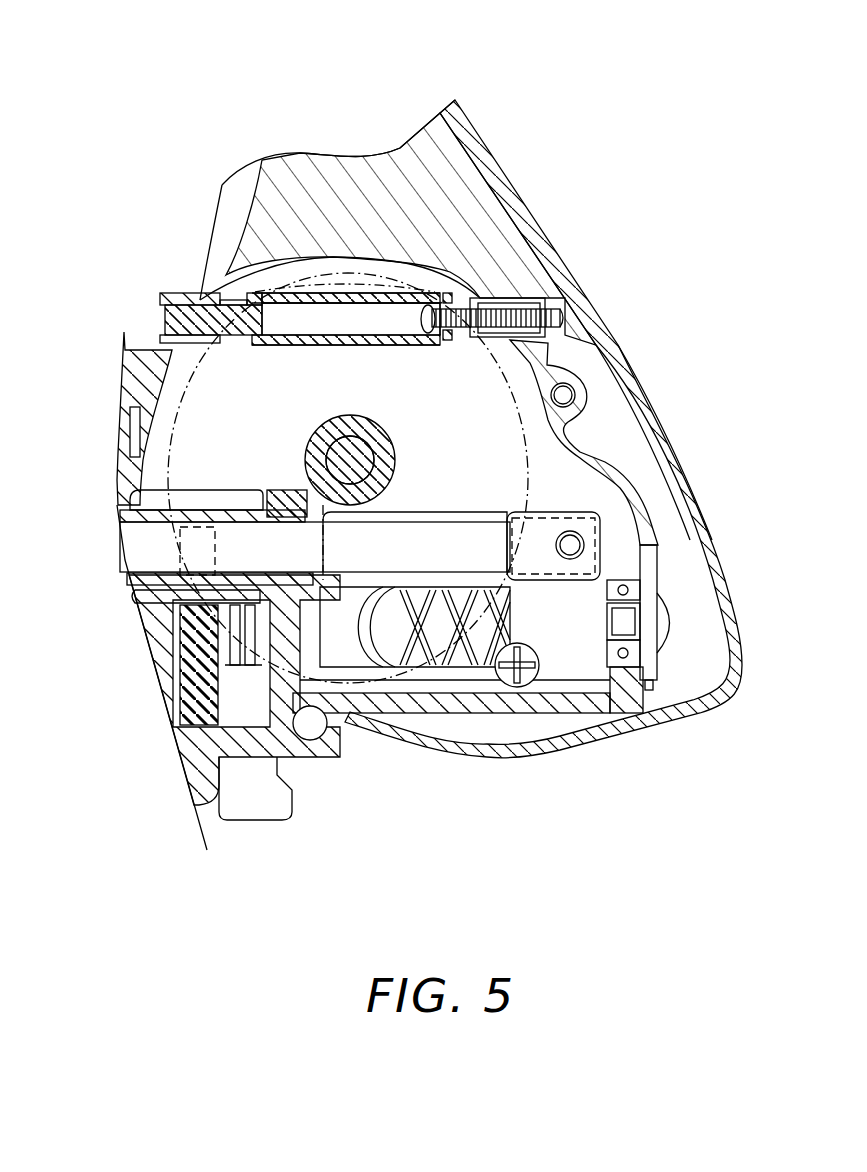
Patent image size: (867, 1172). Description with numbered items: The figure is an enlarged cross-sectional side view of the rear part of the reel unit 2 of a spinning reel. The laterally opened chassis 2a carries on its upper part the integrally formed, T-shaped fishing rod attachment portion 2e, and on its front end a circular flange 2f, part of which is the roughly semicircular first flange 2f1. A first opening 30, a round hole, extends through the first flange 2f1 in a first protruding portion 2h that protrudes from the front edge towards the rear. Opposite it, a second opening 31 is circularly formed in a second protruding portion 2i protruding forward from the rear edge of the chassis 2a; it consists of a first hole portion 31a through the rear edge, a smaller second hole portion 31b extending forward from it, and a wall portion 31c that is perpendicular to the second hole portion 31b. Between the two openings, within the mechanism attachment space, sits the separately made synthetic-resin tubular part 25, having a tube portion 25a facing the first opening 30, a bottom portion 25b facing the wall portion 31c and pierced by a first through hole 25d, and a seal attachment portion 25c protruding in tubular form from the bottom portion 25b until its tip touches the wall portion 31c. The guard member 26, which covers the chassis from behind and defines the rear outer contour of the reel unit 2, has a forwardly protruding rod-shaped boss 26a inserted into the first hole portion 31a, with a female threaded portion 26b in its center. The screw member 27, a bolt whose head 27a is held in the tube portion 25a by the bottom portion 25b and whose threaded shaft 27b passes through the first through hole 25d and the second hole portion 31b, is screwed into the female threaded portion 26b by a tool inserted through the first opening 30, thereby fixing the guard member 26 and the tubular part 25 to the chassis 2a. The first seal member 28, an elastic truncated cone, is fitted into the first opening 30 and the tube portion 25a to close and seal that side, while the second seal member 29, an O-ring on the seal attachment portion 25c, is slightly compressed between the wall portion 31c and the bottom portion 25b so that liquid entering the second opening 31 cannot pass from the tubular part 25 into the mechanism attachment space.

The reel unit 2 is at (519, 106).
The chassis 2a is at (600, 427).
The fishing rod attachment portion 2e is at (313, 190).
The circular flange 2f is at (175, 290).
The first flange 2f1 is at (160, 295).
The first protruding portion 2h is at (192, 350).
The second protruding portion 2i is at (458, 350).
The tubular part 25 is at (273, 346).
The tube portion 25a is at (262, 303).
The bottom portion 25b is at (372, 292).
The seal attachment portion 25c is at (443, 297).
The first through hole 25d is at (435, 347).
The guard member 26 is at (627, 343).
The boss 26a is at (490, 298).
The female threaded portion 26b is at (520, 298).
The screw member 27 is at (487, 335).
The head 27a is at (423, 340).
The threaded shaft 27b is at (497, 350).
The first seal member 28 is at (160, 303).
The second seal member 29 is at (450, 297).
The first opening 30 is at (246, 295).
The second opening 31 is at (548, 318).
The first hole portion 31a is at (517, 297).
The second hole portion 31b is at (466, 300).
The wall portion 31c is at (447, 347).